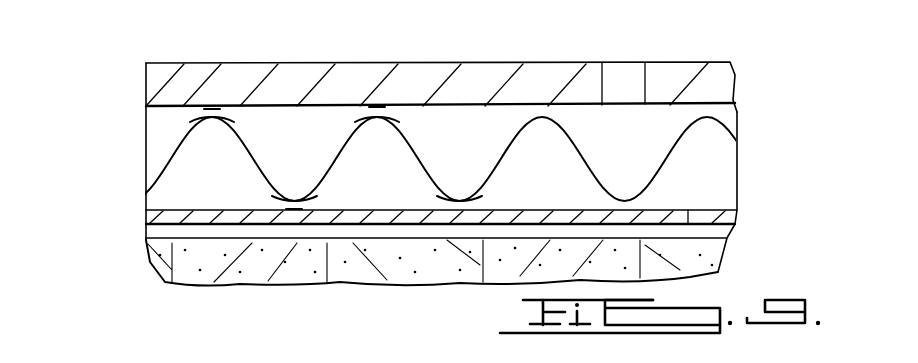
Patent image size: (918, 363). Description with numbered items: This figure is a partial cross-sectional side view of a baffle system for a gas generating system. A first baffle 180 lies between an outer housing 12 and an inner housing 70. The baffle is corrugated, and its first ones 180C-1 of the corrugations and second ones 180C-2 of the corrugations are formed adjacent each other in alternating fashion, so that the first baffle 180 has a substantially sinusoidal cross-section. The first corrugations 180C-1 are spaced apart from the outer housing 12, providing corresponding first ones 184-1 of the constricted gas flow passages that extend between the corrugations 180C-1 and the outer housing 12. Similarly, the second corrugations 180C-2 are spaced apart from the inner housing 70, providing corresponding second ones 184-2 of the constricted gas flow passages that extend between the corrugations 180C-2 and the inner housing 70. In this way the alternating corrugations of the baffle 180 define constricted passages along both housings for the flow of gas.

The outer housing 12 is at (673, 60).
The inner housing 70 is at (422, 222).
The first baffle 180 is at (676, 155).
The first ones of the corrugations 180C-1 is at (210, 119).
The second ones of the corrugations 180C-2 is at (283, 200).
The first ones of the constricted gas flow passages 184-1 is at (208, 108).
The second ones of the constricted gas flow passages 184-2 is at (293, 205).